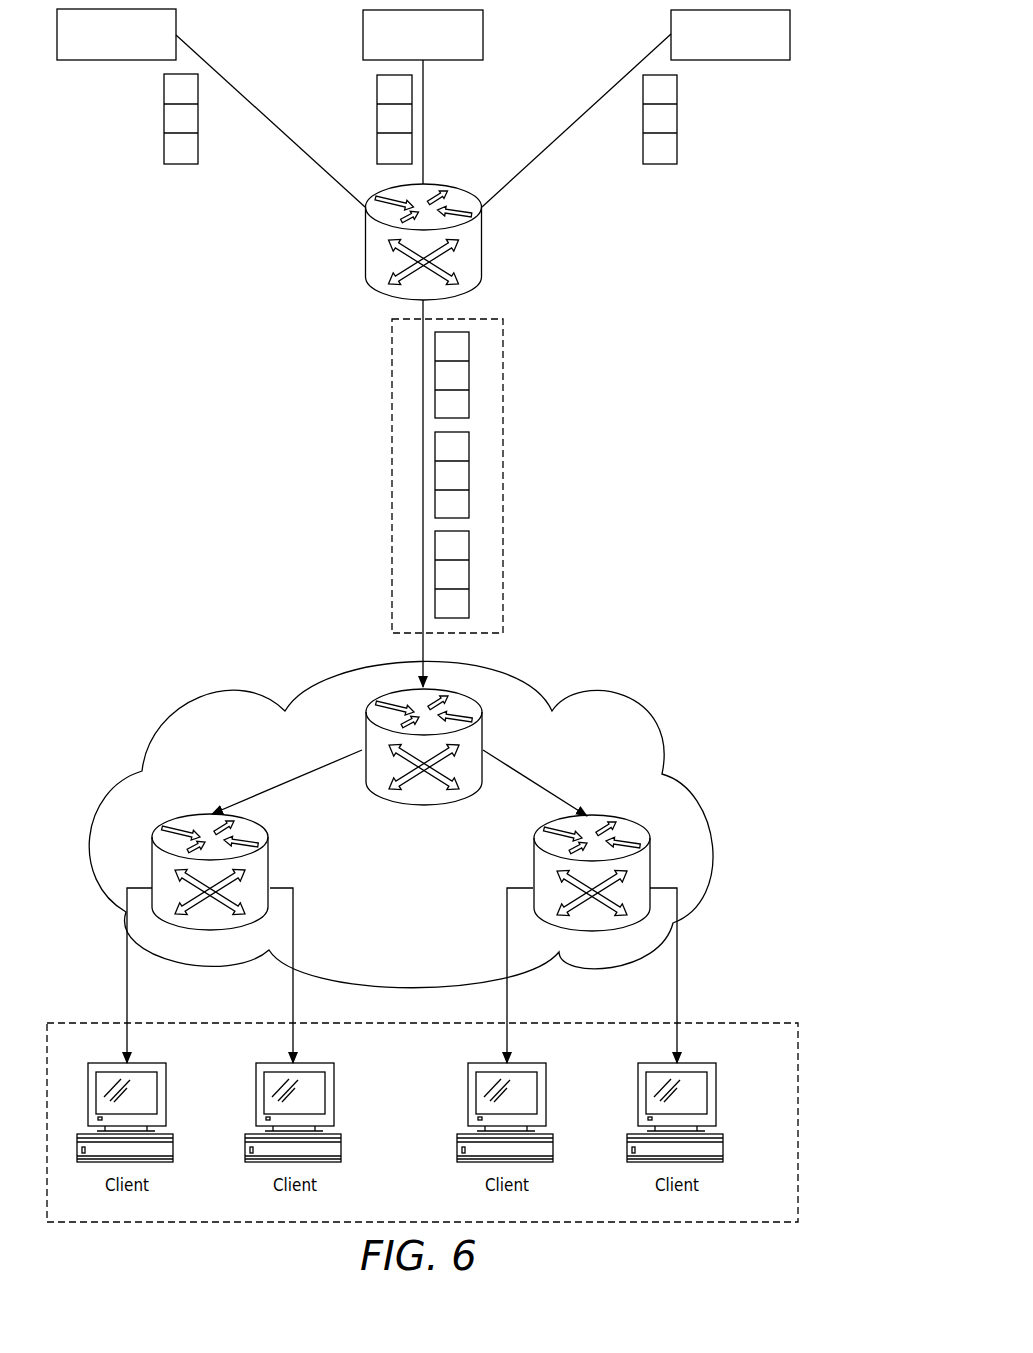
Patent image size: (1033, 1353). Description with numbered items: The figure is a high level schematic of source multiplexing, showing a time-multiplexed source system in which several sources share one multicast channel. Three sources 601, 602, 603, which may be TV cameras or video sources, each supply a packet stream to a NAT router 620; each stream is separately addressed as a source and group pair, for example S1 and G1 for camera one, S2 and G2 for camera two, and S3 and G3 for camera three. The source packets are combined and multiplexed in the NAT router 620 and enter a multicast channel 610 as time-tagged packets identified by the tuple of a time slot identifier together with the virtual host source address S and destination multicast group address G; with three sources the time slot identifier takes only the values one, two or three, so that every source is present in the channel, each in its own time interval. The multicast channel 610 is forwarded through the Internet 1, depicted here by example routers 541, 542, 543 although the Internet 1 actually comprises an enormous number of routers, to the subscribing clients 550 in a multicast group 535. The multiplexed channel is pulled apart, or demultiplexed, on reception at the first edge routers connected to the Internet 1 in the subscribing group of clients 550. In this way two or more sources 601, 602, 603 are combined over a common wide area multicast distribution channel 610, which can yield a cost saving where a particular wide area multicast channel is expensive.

The source (camera 1) 601 is at (75, 61).
The source (camera 2) 602 is at (483, 40).
The source (camera 3) 603 is at (770, 61).
The NAT router 620 is at (482, 260).
The multicast channel 610 is at (503, 603).
The Internet 1 is at (645, 718).
The router 541 is at (424, 808).
The router 542 is at (270, 858).
The router 543 is at (533, 862).
The subscribing clients 550 is at (166, 1096).
The multicast group 535 is at (422, 1149).